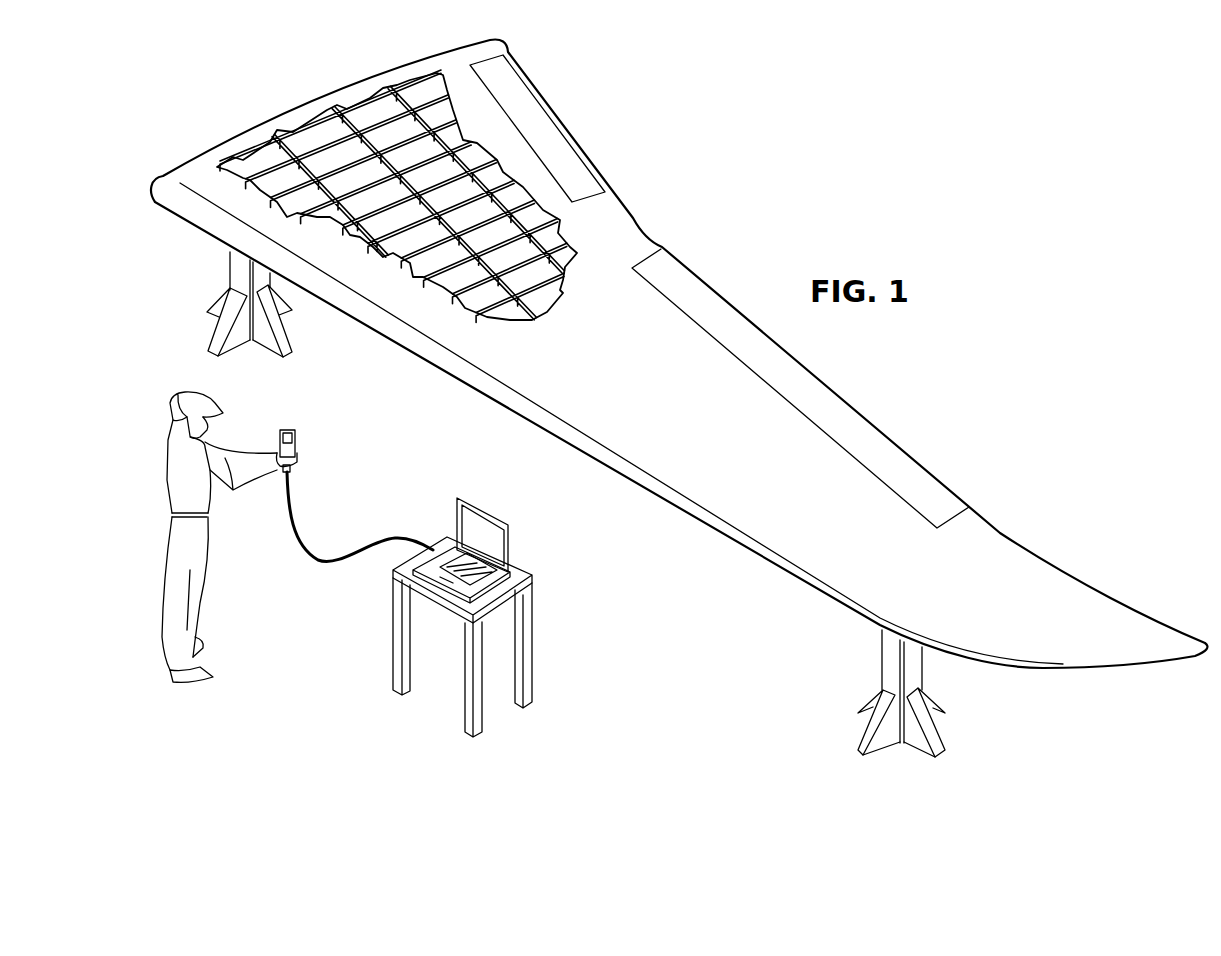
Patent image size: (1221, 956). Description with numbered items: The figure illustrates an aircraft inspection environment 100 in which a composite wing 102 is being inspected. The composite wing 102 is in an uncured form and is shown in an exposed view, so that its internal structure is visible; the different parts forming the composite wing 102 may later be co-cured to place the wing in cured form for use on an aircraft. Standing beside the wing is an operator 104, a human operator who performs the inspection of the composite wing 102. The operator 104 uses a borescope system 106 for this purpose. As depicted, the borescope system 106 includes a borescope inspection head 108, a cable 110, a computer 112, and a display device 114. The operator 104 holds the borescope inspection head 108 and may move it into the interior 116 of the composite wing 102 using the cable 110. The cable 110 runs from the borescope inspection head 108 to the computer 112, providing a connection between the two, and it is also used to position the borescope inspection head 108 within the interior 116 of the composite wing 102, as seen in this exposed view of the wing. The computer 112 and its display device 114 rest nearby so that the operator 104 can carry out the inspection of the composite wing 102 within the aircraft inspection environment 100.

The aircraft inspection environment 100 is at (885, 139).
The composite wing 102 is at (1043, 563).
The operator 104 is at (168, 440).
The borescope system 106 is at (251, 705).
The borescope inspection head 108 is at (288, 428).
The cable 110 is at (395, 538).
The computer 112 is at (507, 523).
The display device 114 is at (497, 542).
The interior 116 is at (313, 135).